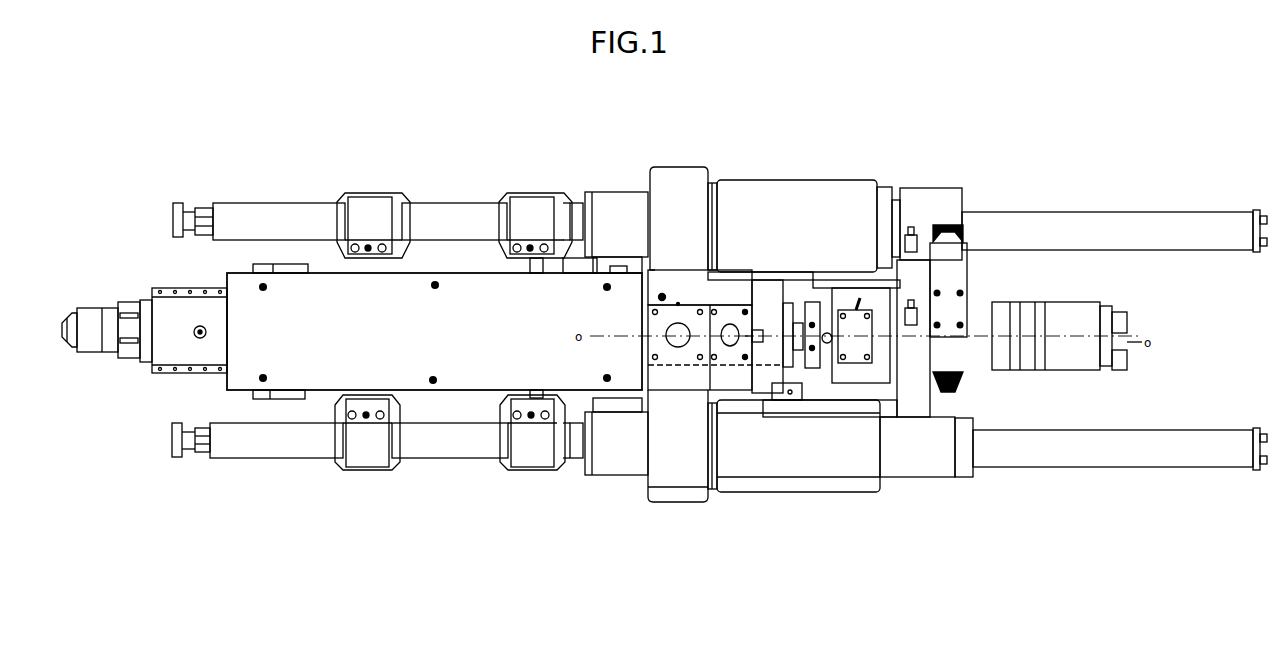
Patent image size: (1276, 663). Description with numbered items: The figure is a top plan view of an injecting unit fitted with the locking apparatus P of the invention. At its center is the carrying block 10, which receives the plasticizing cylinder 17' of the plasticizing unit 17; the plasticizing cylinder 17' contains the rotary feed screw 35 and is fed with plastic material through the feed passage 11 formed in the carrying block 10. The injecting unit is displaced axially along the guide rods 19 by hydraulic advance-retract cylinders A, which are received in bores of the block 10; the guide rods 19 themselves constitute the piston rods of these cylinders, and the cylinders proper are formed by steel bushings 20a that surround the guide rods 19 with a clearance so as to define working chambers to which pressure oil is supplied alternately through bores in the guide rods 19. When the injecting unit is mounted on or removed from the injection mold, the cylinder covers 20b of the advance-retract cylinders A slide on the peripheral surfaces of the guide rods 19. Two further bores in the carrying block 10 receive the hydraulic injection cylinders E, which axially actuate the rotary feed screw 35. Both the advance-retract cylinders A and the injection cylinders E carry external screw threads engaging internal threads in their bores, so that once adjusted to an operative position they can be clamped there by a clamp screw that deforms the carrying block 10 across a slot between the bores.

The carrying block 10 is at (695, 158).
The feed passage 11 is at (730, 346).
The plasticizing unit 17 is at (397, 379).
The plasticizing cylinder 17' is at (109, 378).
The guide rods 19 is at (290, 217).
The steel bushings 20a is at (833, 470).
The cylinder covers 20b is at (587, 477).
The rotary feed screw 35 is at (793, 417).
The advance-retract cylinders A is at (725, 492).
The locking apparatus P is at (758, 408).
The injection cylinders E is at (828, 170).